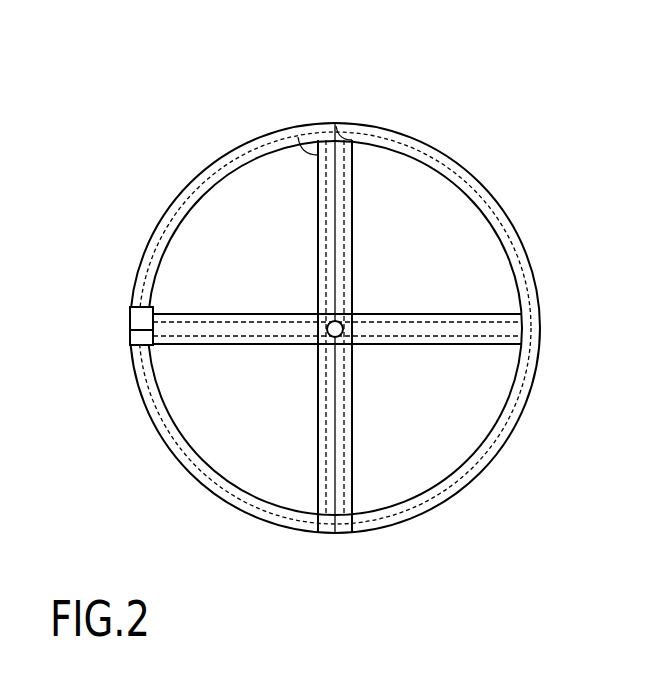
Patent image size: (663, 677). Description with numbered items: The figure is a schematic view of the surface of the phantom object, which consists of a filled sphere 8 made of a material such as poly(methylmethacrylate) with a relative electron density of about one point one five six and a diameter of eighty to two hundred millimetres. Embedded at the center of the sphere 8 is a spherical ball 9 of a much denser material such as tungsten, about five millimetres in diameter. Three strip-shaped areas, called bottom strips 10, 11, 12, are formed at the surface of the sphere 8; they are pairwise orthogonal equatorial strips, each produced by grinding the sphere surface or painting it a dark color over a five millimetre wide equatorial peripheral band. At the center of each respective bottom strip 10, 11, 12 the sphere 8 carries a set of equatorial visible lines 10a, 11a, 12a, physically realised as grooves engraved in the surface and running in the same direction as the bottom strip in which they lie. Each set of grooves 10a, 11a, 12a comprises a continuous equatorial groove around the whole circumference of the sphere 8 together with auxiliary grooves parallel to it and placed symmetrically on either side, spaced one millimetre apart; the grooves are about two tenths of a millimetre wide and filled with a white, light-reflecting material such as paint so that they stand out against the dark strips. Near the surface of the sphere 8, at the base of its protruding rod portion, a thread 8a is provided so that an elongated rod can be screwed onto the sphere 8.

The filled sphere 8 is at (432, 210).
The thread 8a is at (133, 306).
The spherical ball 9 is at (343, 336).
The bottom strip 10 is at (297, 124).
The set of equatorial visible lines 10a is at (352, 124).
The bottom strip 11 is at (232, 150).
The set of equatorial visible lines 11a is at (181, 197).
The bottom strip 12 is at (487, 314).
The set of equatorial visible lines 12a is at (520, 345).